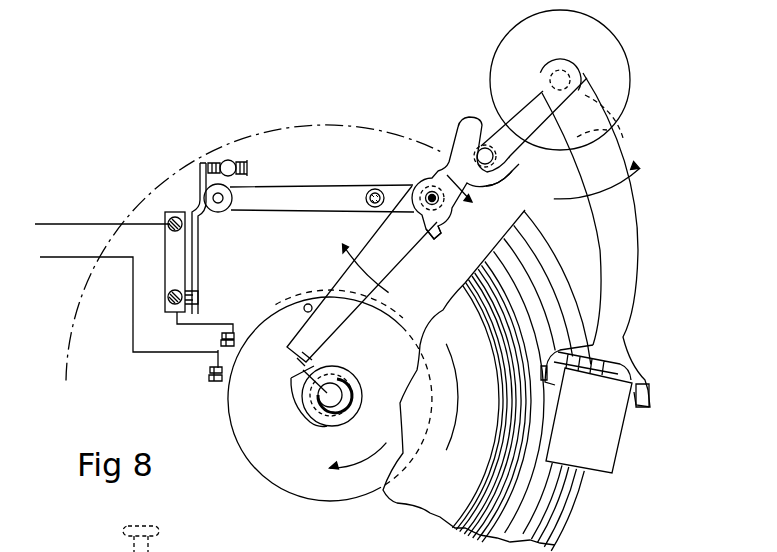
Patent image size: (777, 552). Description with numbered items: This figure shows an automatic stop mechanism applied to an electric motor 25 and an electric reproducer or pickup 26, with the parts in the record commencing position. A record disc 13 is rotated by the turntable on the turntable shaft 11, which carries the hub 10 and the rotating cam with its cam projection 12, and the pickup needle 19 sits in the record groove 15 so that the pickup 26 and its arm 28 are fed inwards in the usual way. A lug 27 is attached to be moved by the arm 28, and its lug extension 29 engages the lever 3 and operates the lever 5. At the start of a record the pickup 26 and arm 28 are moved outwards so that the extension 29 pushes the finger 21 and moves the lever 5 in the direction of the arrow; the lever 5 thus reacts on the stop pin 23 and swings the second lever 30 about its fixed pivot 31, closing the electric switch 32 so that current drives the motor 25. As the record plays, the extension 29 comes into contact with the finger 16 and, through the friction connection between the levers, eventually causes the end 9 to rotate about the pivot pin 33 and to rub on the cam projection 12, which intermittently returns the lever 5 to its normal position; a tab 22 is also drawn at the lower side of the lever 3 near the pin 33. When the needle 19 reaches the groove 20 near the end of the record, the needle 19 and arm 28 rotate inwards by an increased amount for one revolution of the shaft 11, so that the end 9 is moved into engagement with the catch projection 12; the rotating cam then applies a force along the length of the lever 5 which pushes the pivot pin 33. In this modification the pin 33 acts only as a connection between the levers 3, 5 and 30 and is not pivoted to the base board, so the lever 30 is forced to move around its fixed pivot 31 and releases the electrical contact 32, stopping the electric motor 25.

The lever 3 is at (446, 163).
The lever 5 is at (385, 272).
The end 9 is at (308, 357).
The hub 10 is at (356, 406).
The turntable shaft 11 is at (328, 412).
The cam projection 12 is at (300, 386).
The record disc 13 is at (552, 262).
The record groove 15 is at (557, 517).
The finger 16 is at (470, 120).
The pickup needle 19 is at (578, 480).
The groove 20 is at (500, 432).
The finger 21 is at (500, 182).
The stop tab 22 is at (440, 233).
The stop pin 23 is at (306, 305).
The electric motor 25 is at (236, 413).
The electric pickup 26 is at (608, 426).
The lug 27 is at (500, 130).
The arm 28 is at (628, 283).
The lug extension 29 is at (497, 155).
The second lever 30 is at (314, 187).
The pivot 31 is at (373, 192).
The electric switch 32 is at (195, 240).
The pivot pin 33 is at (429, 197).